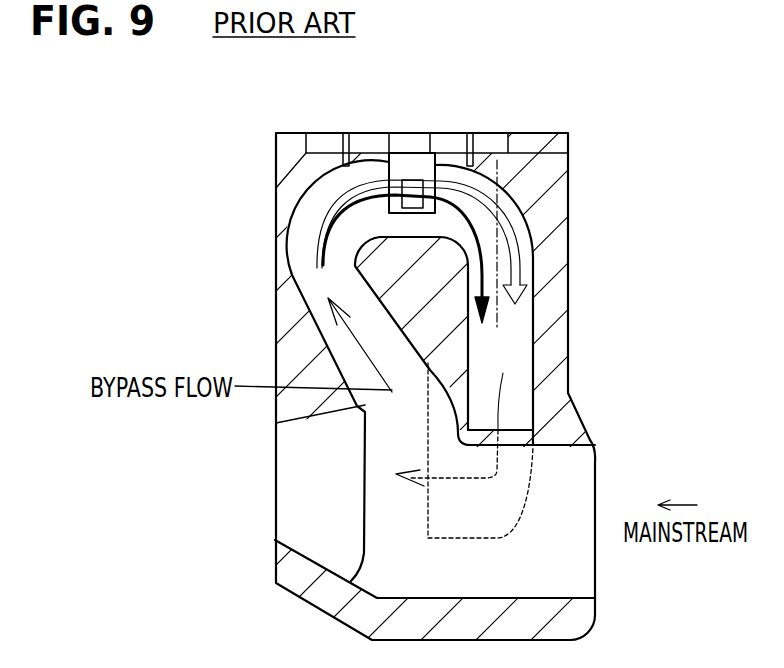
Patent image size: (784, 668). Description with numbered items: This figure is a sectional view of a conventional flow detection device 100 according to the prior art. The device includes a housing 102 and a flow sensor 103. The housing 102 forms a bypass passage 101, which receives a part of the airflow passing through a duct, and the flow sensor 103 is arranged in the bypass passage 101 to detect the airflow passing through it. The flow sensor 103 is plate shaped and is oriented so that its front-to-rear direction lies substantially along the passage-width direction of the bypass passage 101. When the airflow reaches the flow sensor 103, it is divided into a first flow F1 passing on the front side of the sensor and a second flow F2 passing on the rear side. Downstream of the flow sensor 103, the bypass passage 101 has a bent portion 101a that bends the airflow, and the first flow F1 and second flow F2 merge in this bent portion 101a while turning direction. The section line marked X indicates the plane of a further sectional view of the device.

The flow detection device 100 is at (620, 92).
The bypass passage 101 is at (302, 250).
The bent portion 101a is at (508, 197).
The housing 102 is at (290, 327).
The flow sensor 103 is at (390, 196).
The first flow F1 is at (505, 258).
The second flow F2 is at (513, 227).
The section line X- X is at (509, 172).